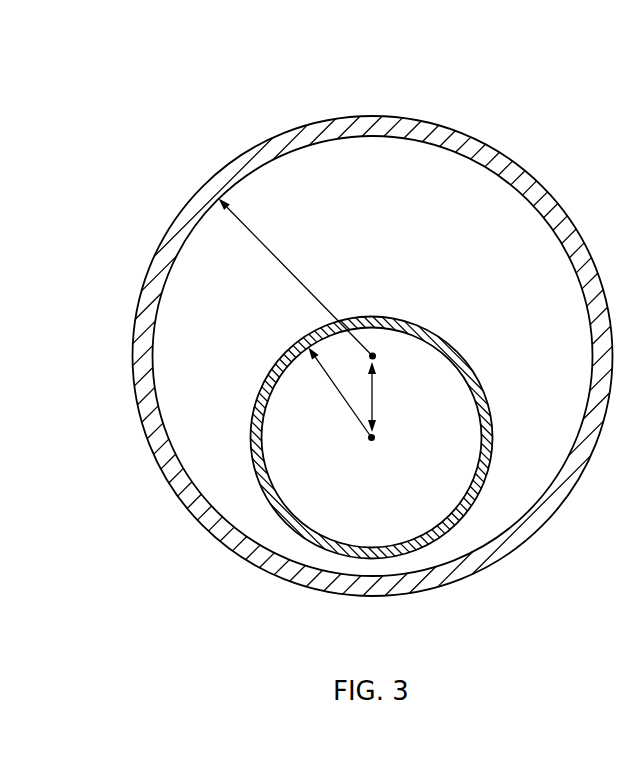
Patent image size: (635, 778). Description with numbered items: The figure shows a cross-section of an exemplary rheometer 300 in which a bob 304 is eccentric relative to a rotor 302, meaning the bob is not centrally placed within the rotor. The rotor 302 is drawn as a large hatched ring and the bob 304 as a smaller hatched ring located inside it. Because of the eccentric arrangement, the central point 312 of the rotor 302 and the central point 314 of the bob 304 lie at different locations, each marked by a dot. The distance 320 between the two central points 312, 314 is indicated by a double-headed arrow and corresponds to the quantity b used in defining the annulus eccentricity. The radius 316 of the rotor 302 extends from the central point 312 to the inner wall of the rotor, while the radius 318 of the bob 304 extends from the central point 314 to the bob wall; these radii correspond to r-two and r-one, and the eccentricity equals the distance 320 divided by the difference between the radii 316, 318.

The rheometer 300 is at (359, 321).
The rotor 302 is at (416, 119).
The bob 304 is at (450, 341).
The central point of the rotor 312 is at (377, 356).
The central point of the bob 314 is at (372, 441).
The radius of the rotor 316 is at (272, 248).
The radius of the bob 318 is at (343, 405).
The distance between the two central points 320 is at (373, 397).